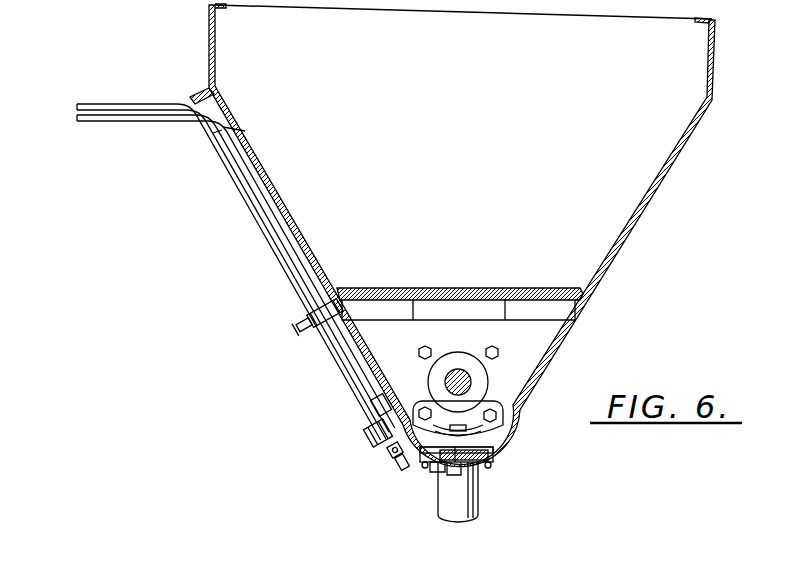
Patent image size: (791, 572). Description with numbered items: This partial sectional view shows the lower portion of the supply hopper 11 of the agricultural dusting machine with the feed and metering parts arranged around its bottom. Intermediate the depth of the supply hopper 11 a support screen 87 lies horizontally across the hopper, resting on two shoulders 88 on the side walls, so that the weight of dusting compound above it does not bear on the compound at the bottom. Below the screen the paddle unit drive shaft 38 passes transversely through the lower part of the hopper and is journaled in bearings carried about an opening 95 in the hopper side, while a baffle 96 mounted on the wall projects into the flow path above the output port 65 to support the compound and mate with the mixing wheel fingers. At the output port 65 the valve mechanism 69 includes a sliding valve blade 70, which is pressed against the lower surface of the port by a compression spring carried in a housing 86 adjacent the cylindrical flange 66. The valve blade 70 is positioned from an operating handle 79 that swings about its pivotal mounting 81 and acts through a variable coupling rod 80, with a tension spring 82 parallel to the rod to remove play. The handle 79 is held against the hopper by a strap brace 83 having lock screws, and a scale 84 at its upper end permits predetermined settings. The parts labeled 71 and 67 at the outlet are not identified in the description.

The supply hopper 11 is at (655, 182).
The scale 84 is at (200, 90).
The operating handle 79 is at (79, 112).
The strap brace 83 is at (318, 330).
The variable coupling rod 80 is at (374, 406).
The pivotal mounting 81 is at (368, 438).
The tension spring 82 is at (399, 470).
The support screen 87 is at (442, 288).
The shoulder 88 is at (378, 306).
The opening 95 is at (452, 372).
The baffle 96 is at (444, 388).
The paddle unit drive shaft 38 is at (471, 381).
The top plate 71 is at (476, 448).
The output port 65 is at (492, 463).
The packing 67 is at (480, 468).
The cylindrical flange 66 is at (478, 503).
The valve mechanism 69 is at (428, 484).
The valve blade 70 is at (448, 462).
The housing 86 is at (455, 462).